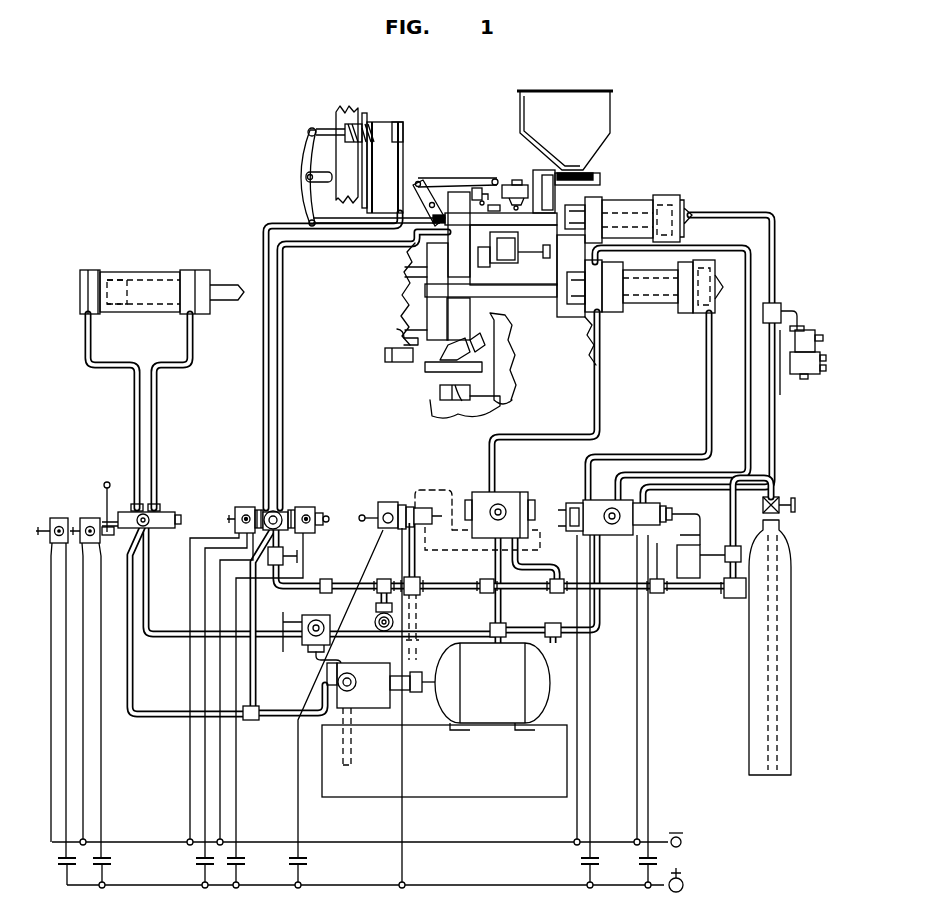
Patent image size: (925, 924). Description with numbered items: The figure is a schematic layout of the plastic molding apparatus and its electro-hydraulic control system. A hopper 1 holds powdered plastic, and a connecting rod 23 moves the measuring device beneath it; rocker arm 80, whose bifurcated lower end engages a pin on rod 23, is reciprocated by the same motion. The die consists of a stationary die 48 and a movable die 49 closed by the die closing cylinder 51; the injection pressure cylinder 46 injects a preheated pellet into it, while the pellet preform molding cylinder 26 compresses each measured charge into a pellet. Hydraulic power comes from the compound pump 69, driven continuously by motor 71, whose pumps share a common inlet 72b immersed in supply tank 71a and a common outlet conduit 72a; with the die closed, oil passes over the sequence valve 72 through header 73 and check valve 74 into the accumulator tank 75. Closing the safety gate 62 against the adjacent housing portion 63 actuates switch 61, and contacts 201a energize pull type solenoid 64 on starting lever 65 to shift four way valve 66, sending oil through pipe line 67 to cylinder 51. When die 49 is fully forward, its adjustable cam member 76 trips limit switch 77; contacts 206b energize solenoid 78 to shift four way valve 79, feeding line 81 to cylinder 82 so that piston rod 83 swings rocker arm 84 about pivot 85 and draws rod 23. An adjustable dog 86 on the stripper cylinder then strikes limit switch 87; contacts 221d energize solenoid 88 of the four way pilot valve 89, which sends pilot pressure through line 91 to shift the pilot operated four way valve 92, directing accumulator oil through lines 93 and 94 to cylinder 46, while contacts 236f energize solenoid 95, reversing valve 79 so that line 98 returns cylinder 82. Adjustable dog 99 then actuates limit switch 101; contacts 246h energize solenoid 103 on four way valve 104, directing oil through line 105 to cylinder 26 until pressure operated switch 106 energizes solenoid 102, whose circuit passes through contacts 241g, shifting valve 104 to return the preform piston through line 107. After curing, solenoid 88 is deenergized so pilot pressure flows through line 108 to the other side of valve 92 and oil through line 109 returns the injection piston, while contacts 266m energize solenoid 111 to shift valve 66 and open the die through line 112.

The hopper 1 is at (600, 113).
The connecting rod 23 is at (387, 218).
The pellet preform molding cylinder 26 is at (634, 200).
The injection pressure cylinder 46 is at (666, 305).
The stationary die 48 is at (420, 258).
The movable die 49 is at (404, 289).
The die closing cylinder 51 is at (143, 283).
The limit switch 61 is at (440, 390).
The safety gate 62 is at (436, 360).
The adjacent portion of machine housing 63 is at (509, 394).
The pull type solenoid 64 is at (90, 518).
The starting lever 65 is at (107, 486).
The four way valve 66 is at (172, 515).
The pipe line 67 is at (132, 428).
The pump 69 is at (337, 687).
The motor 71 is at (490, 716).
The supply tank 71a is at (496, 795).
The sequence valve 72 is at (375, 616).
The common outlet conduit 72a is at (328, 655).
The common inlet 72b is at (352, 735).
The header 73 is at (350, 583).
The check valve 74 is at (736, 598).
The accumulator tank 75 is at (750, 740).
The adjustable cam member 76 is at (397, 329).
The limit switch 77 is at (388, 362).
The solenoid 78 is at (246, 507).
The four way valve 79 is at (305, 507).
The rocker arm 80 is at (426, 181).
The line 81 is at (266, 350).
The cylinder 82 is at (387, 130).
The piston rod 83 is at (327, 131).
The rocker arm 84 is at (304, 162).
The pivot 85 is at (303, 179).
The adjustable dog 86 is at (492, 205).
The limit switch 87 is at (475, 188).
The solenoid 88 is at (386, 504).
The four way pilot valve 89 is at (418, 508).
The line 91 is at (462, 552).
The pilot operated double pressure four way valve 92 is at (478, 496).
The line 93 is at (522, 572).
The line 94 is at (526, 495).
The solenoid 95 is at (517, 180).
The line 98 is at (281, 361).
The adjustable dog 99 is at (508, 187).
The limit switch 101 is at (545, 178).
The solenoid 102 is at (580, 503).
The solenoid 103 is at (658, 512).
The four way valve 104 is at (630, 505).
The line 105 is at (781, 395).
The pressure operated switch 106 is at (781, 306).
The line 107 is at (745, 392).
The line 108 is at (440, 490).
The line 109 is at (603, 412).
The solenoid 111 is at (59, 518).
The line 112 is at (158, 436).
The relay contacts 201a is at (111, 862).
The relay contacts 206b is at (203, 868).
The relay contacts 221d is at (307, 862).
The relay contacts 236f is at (248, 861).
The relay contacts 241g is at (581, 859).
The relay contacts 246h is at (657, 859).
The relay contacts 266m is at (64, 868).